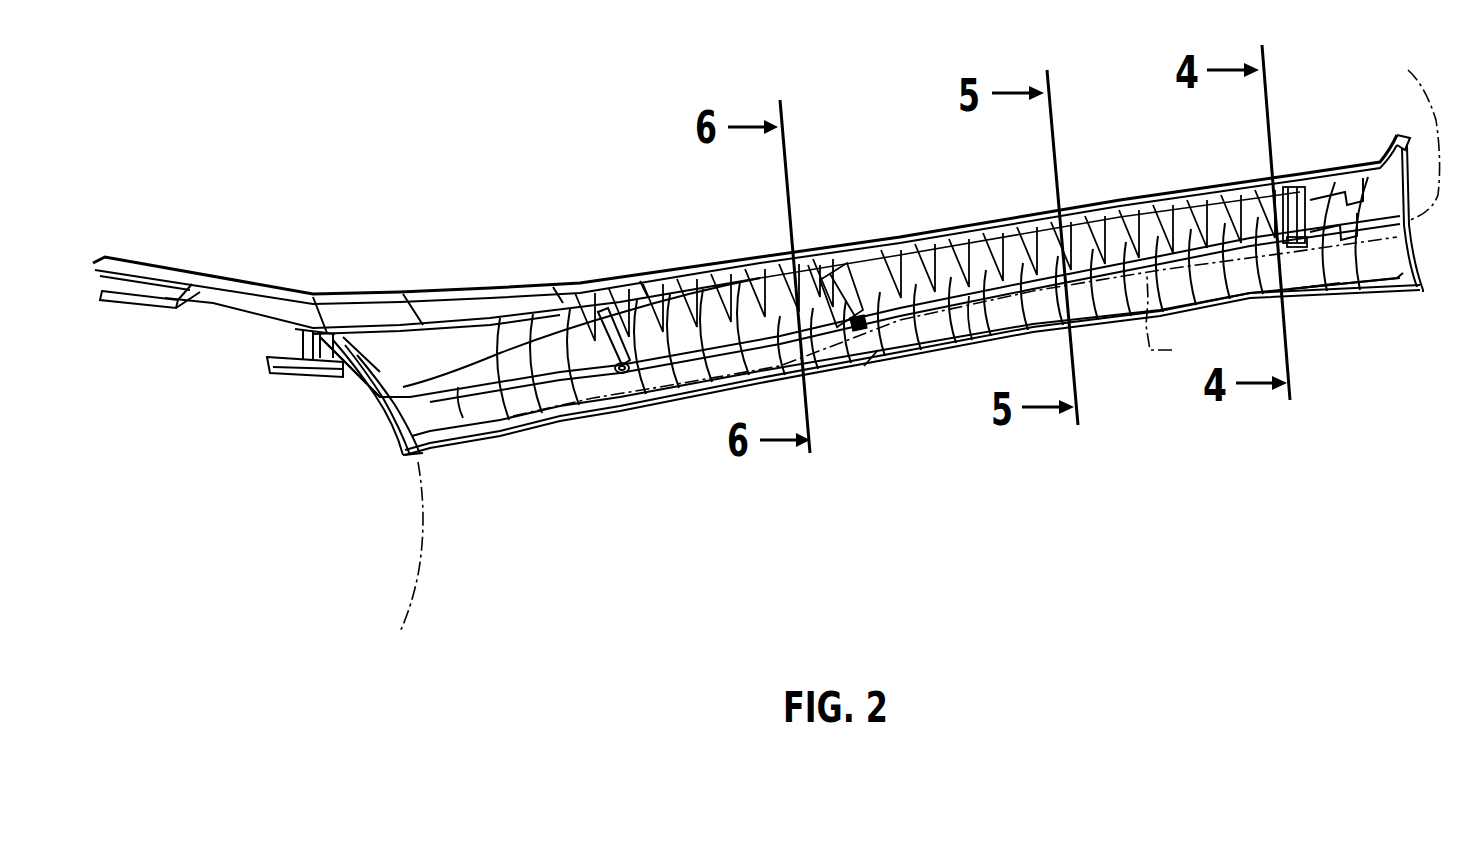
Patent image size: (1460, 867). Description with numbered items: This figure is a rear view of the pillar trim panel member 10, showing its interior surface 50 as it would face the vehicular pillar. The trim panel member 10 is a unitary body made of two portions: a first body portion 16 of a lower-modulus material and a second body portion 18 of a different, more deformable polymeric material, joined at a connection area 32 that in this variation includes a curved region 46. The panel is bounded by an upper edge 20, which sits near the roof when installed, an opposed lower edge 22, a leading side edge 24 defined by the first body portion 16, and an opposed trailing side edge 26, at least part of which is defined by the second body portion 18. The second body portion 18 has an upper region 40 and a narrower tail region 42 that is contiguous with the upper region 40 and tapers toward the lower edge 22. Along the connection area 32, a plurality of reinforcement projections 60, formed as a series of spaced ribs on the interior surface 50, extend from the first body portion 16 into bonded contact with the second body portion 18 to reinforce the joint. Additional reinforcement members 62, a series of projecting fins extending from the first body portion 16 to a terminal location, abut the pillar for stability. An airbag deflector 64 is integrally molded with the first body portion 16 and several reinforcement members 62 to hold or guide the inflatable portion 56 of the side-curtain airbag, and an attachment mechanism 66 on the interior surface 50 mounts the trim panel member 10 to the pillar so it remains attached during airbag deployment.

The trim panel member 10 is at (510, 208).
The first body portion 16 is at (860, 247).
The second body portion 18 is at (905, 343).
The upper edge 20 is at (1410, 182).
The lower edge 22 is at (362, 380).
The leading side edge 24 is at (675, 275).
The trailing side edge 26 is at (850, 365).
The connection area 32 is at (920, 337).
The upper region 40 is at (1327, 287).
The tail region 42 is at (642, 392).
The curved region 46 is at (873, 370).
The interior surface 50 is at (972, 340).
The inflatable portion 56 is at (1418, 280).
The reinforcement projection 60 is at (1150, 284).
The reinforcement member 62 is at (882, 262).
The airbag deflector 64 is at (1146, 218).
The attachment mechanism 66 is at (1300, 185).